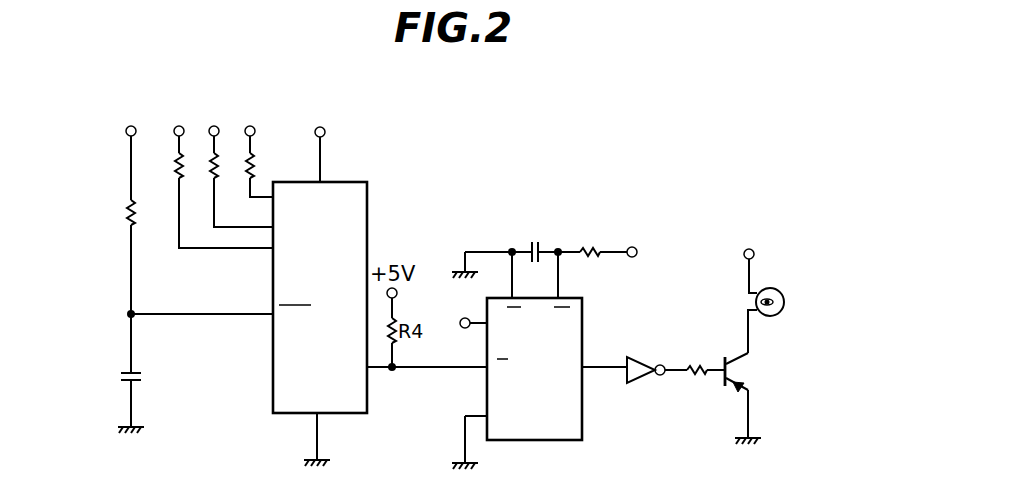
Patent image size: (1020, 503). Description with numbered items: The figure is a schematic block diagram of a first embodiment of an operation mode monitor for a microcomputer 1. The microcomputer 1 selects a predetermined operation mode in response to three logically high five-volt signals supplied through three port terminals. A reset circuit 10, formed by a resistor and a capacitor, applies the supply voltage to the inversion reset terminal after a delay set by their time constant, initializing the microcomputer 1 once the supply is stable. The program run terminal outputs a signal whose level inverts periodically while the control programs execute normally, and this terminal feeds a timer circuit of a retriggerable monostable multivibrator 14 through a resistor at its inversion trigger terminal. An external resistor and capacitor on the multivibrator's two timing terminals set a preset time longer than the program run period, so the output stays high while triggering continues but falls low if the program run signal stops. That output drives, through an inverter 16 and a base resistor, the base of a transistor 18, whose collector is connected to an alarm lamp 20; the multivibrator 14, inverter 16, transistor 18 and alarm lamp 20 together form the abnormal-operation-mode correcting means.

The microcomputer 1 is at (353, 182).
The reset circuit 10 is at (145, 328).
The timer circuit of a retriggerable monostable multivibrator 14 is at (583, 313).
The inverter 16 is at (644, 383).
The transistor 18 is at (746, 360).
The alarm lamp 20 is at (782, 290).